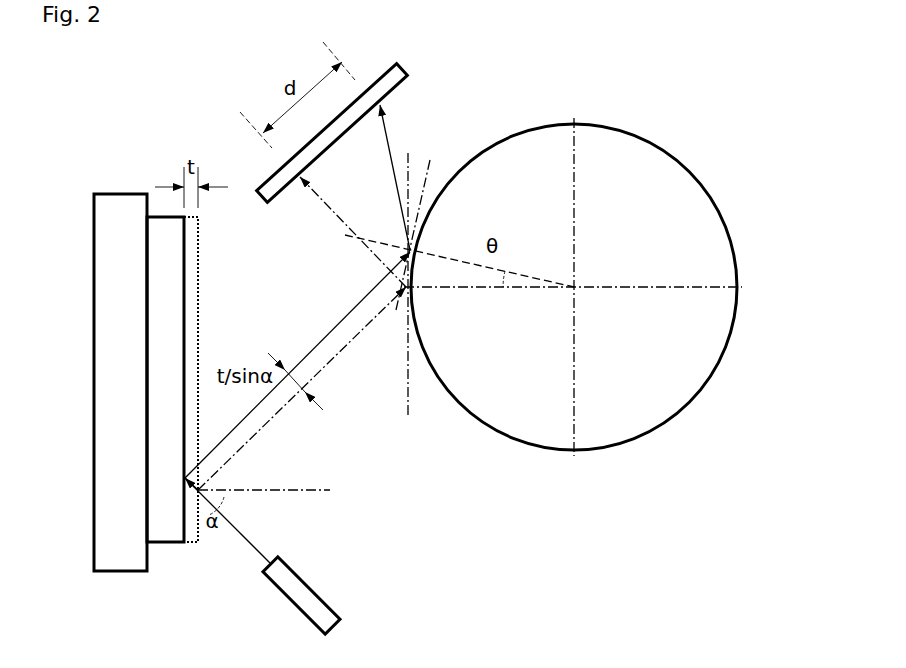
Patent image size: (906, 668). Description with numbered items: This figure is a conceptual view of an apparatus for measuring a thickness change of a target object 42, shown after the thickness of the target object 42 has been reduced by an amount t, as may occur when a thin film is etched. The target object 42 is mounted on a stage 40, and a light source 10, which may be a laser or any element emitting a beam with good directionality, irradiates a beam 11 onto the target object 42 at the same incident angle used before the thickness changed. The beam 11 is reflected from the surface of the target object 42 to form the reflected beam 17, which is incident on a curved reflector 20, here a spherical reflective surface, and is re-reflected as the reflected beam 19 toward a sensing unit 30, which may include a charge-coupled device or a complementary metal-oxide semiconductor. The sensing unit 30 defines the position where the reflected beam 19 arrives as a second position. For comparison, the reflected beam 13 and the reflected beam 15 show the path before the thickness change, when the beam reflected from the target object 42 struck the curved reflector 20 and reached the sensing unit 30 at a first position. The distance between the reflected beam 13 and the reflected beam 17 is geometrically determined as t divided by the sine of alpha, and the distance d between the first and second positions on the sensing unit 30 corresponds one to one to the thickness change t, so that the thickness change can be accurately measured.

The light source 10 is at (300, 588).
The beam 11 is at (232, 528).
The reflected beam 13 is at (318, 380).
The reflected beam 15 is at (317, 187).
The reflected beam 17 is at (303, 338).
The reflected beam 19 is at (390, 145).
The curved reflector 20 is at (688, 373).
The sensing unit 30 is at (397, 67).
The stage 40 is at (115, 320).
The target object 42 is at (163, 393).